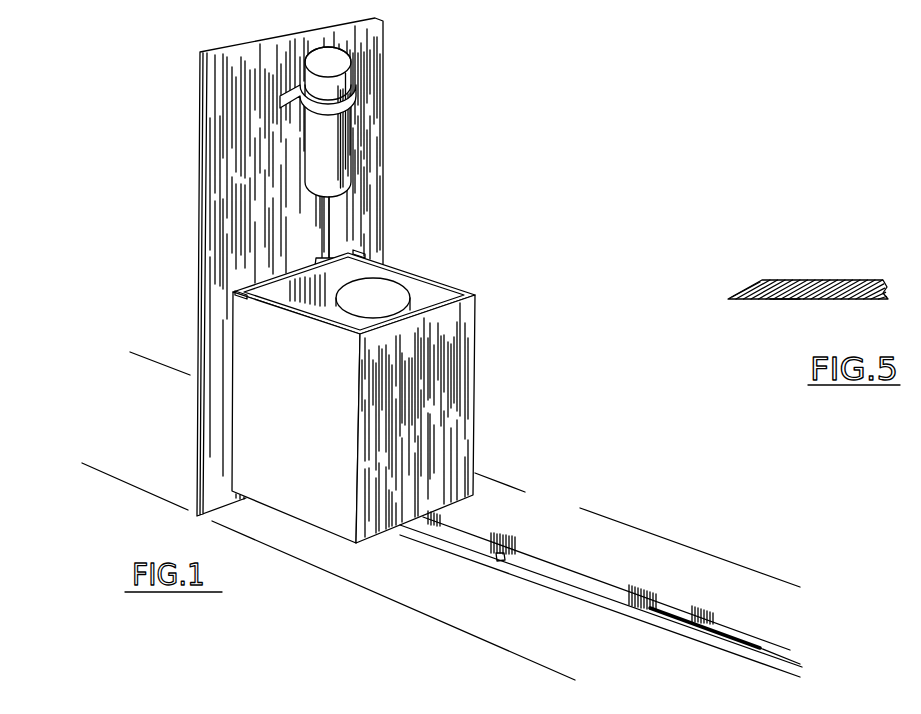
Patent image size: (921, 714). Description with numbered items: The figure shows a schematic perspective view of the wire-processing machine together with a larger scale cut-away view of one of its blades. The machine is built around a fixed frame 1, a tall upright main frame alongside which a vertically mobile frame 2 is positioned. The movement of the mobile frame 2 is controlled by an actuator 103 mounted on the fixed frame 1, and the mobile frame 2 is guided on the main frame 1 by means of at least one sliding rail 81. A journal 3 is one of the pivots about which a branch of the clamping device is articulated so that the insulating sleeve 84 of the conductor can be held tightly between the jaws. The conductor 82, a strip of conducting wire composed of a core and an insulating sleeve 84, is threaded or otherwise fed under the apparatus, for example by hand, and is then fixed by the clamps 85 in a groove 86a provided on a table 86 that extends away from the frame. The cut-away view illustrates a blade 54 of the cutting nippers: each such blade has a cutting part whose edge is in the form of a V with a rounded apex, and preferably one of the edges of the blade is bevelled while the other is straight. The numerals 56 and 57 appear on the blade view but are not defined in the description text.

In FIG. 1, the fixed frame 1 is at (381, 131).
In FIG. 1, the vertically mobile frame 2 is at (464, 333).
In FIG. 1, the journal 3 is at (315, 180).
In FIG. 1, the actuator 103 is at (313, 142).
In FIG. 1, the sliding rail 81 is at (361, 253).
In FIG. 1, the conductor 82 is at (532, 547).
In FIG. 1, the insulating sleeve 84 is at (593, 587).
In FIG. 1, the clamps 85 is at (497, 555).
In FIG. 1, the table 86 is at (767, 583).
In FIG. 1, the groove 86a is at (710, 623).
In FIG. 5, the blade 54 is at (782, 275).
In FIG. 5, the strip lower face 56 is at (780, 300).
In FIG. 5, the strip bevelled edge 57 is at (743, 291).